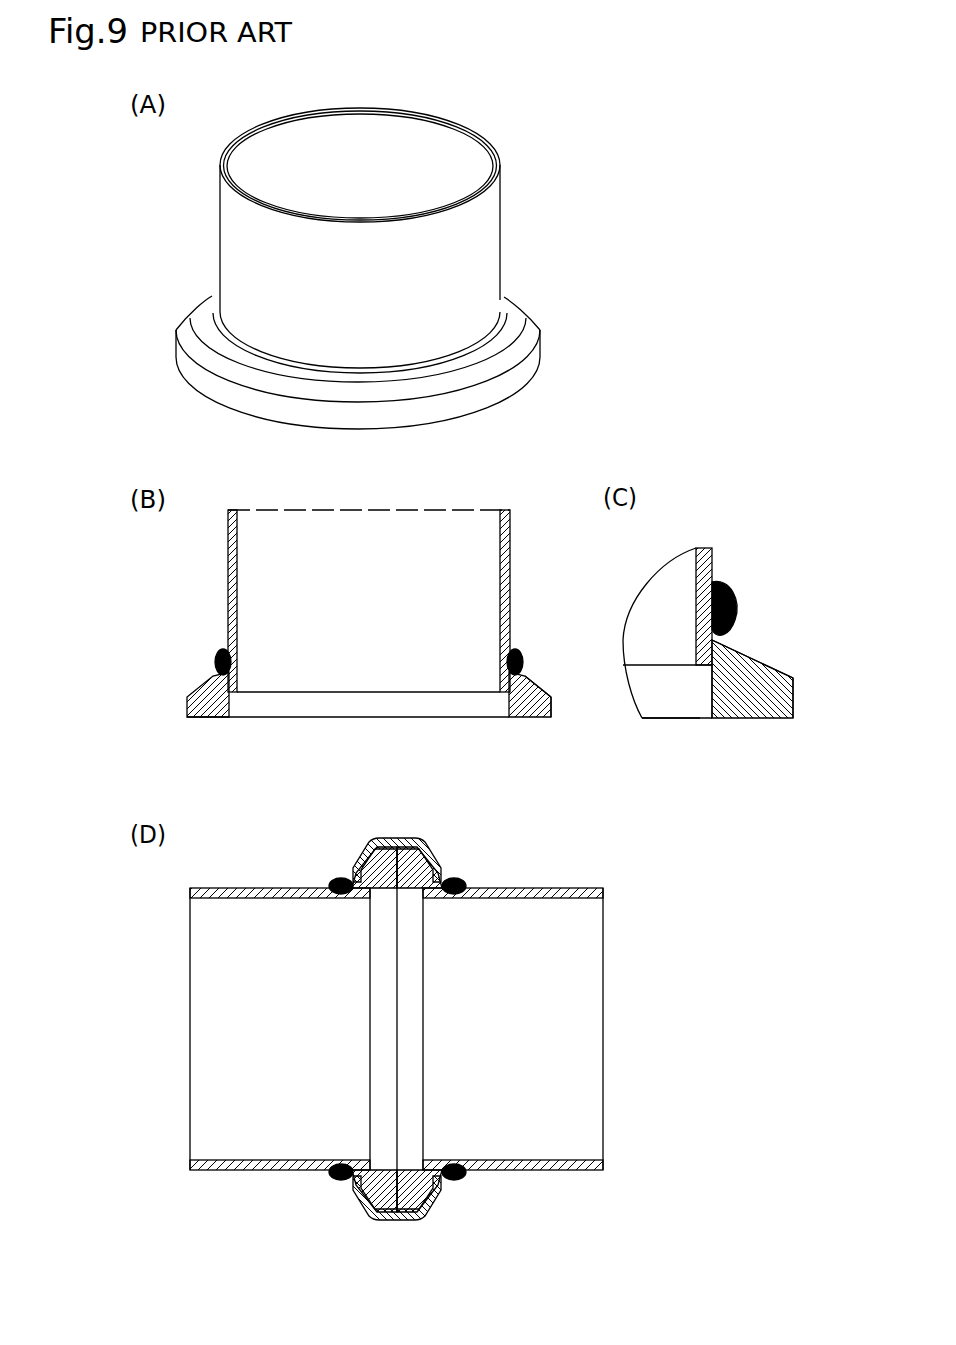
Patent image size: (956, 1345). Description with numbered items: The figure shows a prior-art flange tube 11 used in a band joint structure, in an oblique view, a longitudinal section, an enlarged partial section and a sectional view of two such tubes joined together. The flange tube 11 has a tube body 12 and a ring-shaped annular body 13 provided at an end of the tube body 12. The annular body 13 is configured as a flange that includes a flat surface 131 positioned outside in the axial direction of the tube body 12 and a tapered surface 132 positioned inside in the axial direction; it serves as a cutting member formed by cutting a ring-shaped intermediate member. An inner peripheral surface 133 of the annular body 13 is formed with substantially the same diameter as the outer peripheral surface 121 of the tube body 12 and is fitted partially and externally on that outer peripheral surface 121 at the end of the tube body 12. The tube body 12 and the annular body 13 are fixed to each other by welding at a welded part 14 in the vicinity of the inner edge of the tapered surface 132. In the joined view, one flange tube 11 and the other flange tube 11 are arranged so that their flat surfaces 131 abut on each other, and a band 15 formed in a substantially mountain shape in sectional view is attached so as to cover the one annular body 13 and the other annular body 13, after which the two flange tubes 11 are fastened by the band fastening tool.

The flange tube 11 is at (489, 125).
The tube body 12 is at (232, 241).
The outer peripheral surface 121 is at (502, 232).
The annular body 13 is at (525, 377).
The flat surface 131 is at (525, 719).
The tapered surface 132 is at (520, 343).
The inner peripheral surface 133 is at (242, 712).
The welded part 14 is at (205, 312).
The crimp shell 15 is at (398, 838).